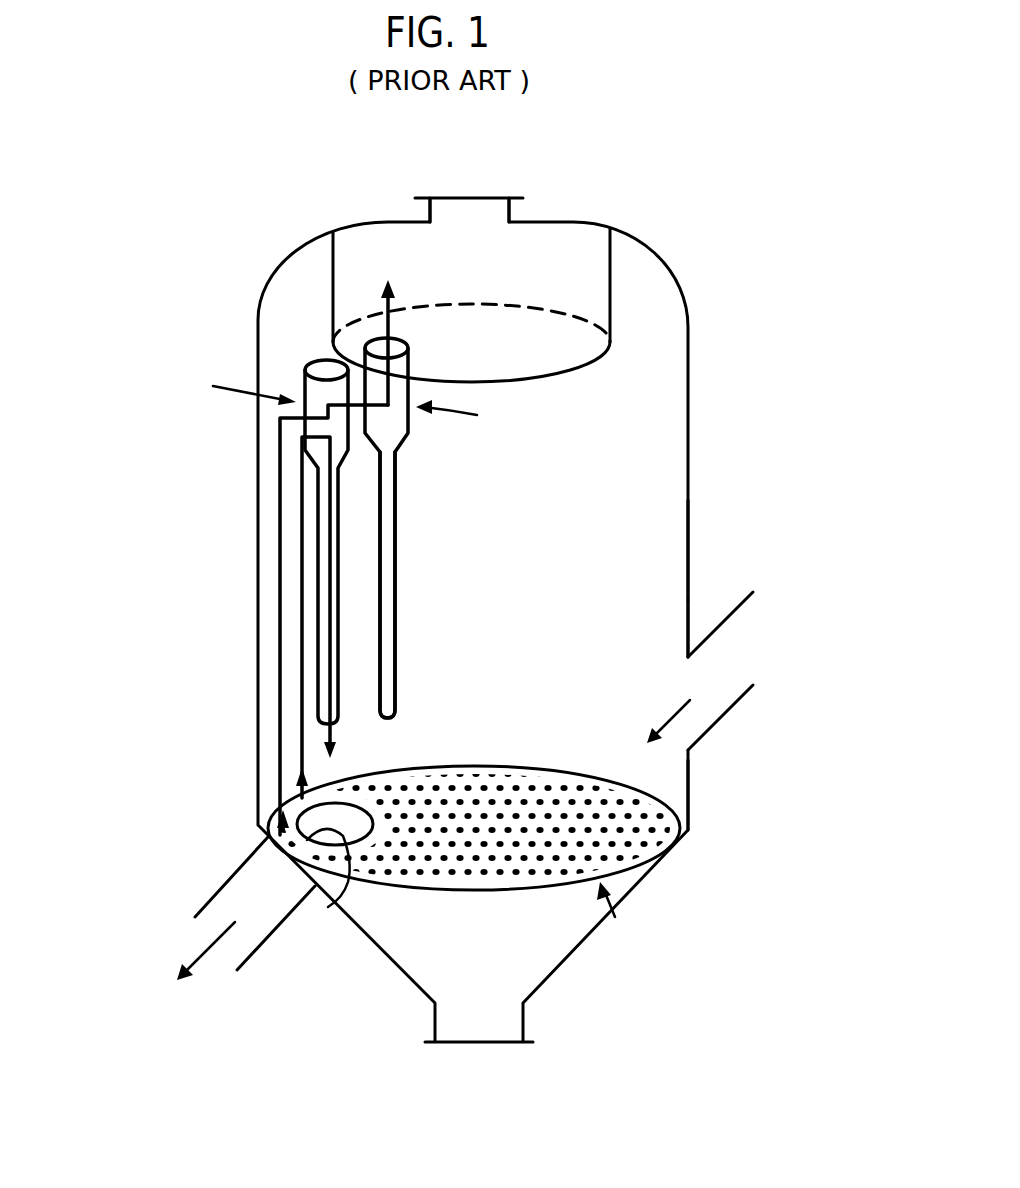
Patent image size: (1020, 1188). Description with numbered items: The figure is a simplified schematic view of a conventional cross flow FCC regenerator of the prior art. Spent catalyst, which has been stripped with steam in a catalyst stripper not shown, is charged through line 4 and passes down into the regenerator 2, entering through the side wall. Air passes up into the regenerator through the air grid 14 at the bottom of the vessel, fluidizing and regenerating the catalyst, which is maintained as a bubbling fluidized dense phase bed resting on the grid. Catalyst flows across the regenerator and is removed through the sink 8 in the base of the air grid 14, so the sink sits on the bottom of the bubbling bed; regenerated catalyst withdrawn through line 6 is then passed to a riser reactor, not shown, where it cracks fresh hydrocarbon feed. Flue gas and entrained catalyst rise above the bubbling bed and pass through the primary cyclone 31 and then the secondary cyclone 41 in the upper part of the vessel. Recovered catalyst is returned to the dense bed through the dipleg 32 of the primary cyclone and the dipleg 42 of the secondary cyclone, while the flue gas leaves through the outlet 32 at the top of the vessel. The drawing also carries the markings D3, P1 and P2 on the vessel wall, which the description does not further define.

The regenerator 2 is at (688, 467).
The line 4 is at (732, 712).
The line 6 is at (262, 945).
The sink 8 is at (328, 907).
The air grid 14 is at (640, 863).
The primary cyclone 31 is at (310, 385).
The dipleg / outlet 32 is at (495, 198).
The secondary cyclone 41 is at (370, 375).
The dipleg 42 is at (397, 622).
The dense bed level D3 is at (688, 553).
The pressure point P1 is at (690, 790).
The pressure point P2 is at (688, 628).